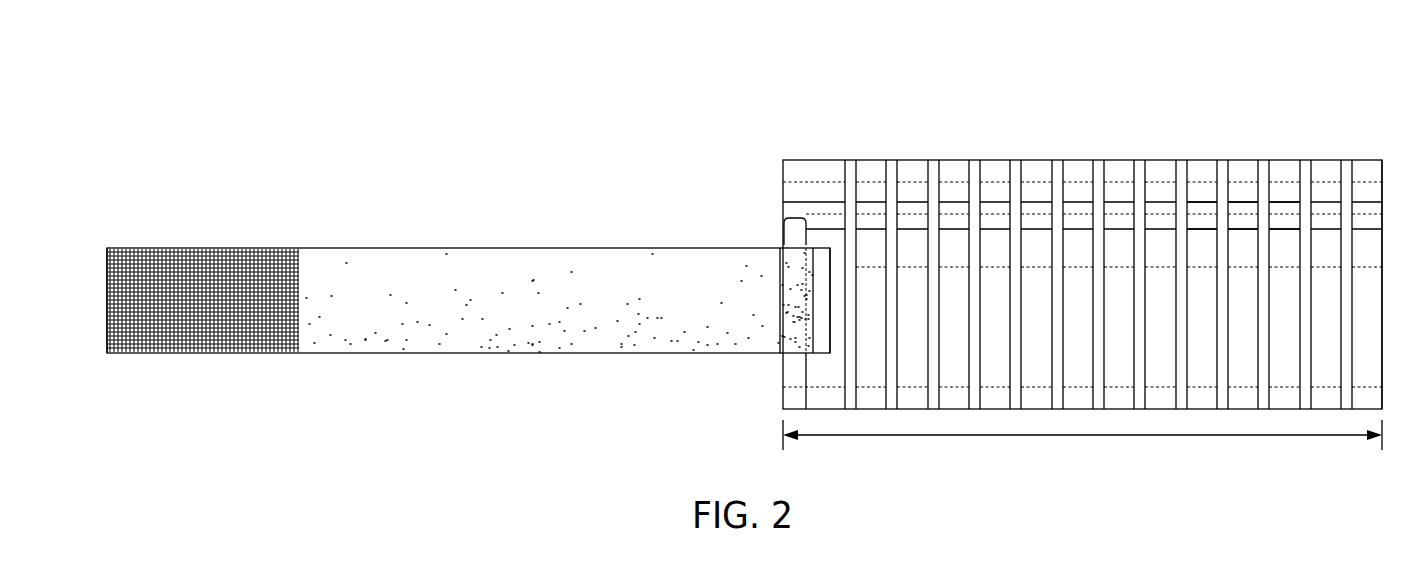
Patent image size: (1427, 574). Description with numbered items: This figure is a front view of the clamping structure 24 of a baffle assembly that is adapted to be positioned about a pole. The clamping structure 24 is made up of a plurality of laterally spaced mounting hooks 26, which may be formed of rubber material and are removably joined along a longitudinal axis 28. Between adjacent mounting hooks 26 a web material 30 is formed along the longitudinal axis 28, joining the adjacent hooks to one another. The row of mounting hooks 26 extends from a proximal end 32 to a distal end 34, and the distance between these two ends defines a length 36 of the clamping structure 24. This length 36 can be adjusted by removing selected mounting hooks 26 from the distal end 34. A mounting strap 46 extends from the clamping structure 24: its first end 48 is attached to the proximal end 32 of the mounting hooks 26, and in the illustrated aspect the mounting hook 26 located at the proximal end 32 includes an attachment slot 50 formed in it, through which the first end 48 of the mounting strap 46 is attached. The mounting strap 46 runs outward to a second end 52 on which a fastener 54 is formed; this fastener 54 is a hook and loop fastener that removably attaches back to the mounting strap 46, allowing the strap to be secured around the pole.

The clamping structure 24 is at (1084, 116).
The mounting hooks 26 is at (1203, 160).
The longitudinal axis 28 is at (1258, 250).
The web material 30 is at (1222, 402).
The proximal end 32 is at (783, 190).
The distal end 34 is at (1383, 270).
The length 36 is at (1096, 437).
The mounting strap 46 is at (537, 257).
The first end 48 is at (795, 328).
The attachment slot 50 is at (822, 255).
The second end 52 is at (107, 295).
The fastener 54 is at (212, 248).